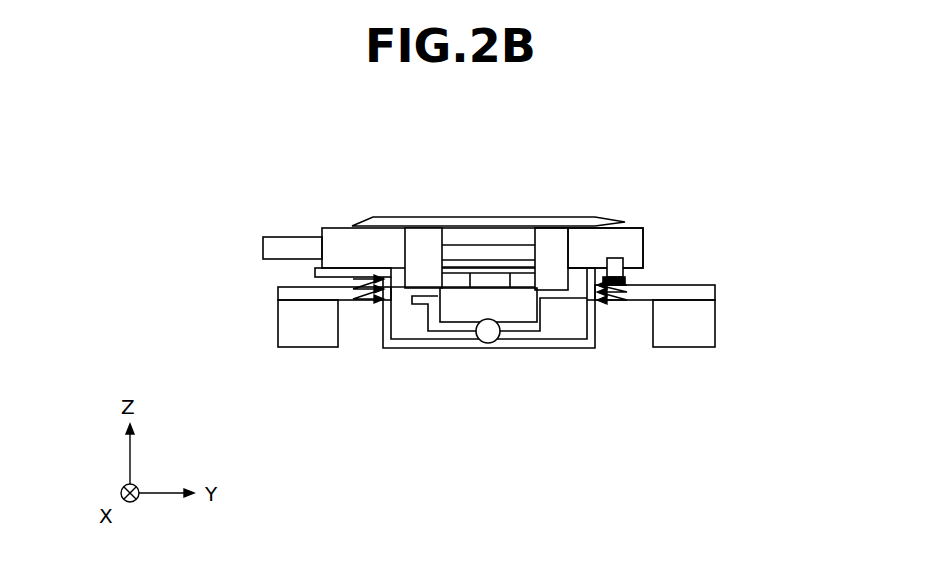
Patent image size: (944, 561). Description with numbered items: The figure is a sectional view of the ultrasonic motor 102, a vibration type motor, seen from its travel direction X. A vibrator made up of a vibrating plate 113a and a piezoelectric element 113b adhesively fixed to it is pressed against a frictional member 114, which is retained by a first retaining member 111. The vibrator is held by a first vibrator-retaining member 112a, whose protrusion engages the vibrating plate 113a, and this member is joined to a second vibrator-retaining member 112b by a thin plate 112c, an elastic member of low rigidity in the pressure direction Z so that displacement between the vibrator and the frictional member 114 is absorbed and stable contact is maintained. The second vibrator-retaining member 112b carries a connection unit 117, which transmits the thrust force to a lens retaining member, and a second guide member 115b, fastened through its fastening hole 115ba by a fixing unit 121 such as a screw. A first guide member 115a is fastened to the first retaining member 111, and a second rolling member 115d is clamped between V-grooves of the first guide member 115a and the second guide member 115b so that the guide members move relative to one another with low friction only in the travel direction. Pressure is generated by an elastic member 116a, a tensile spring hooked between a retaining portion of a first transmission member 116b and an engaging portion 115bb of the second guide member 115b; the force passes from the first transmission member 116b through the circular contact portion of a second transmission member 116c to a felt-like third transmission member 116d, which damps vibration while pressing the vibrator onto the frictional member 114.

The ultrasonic motor 102 is at (236, 147).
The first retaining member 111 is at (698, 323).
The first vibrator-retaining member 112a is at (560, 223).
The second vibrator-retaining member 112b is at (633, 228).
The thin plate 112c is at (540, 217).
The vibrating plate 113a is at (458, 272).
The piezoelectric element 113b is at (460, 266).
The frictional member 114 is at (458, 303).
The first guide member 115a is at (522, 325).
The second guide member 115b is at (568, 345).
The fastening hole 115ba is at (645, 275).
The engaging portion 115bb is at (602, 303).
The second rolling member 115d is at (488, 333).
The elastic member 116a is at (357, 222).
The first transmission member 116b is at (422, 222).
The second transmission member 116c is at (465, 236).
The third transmission member 116d is at (515, 256).
The connection unit 117 is at (263, 247).
The fixing unit 121 is at (624, 262).